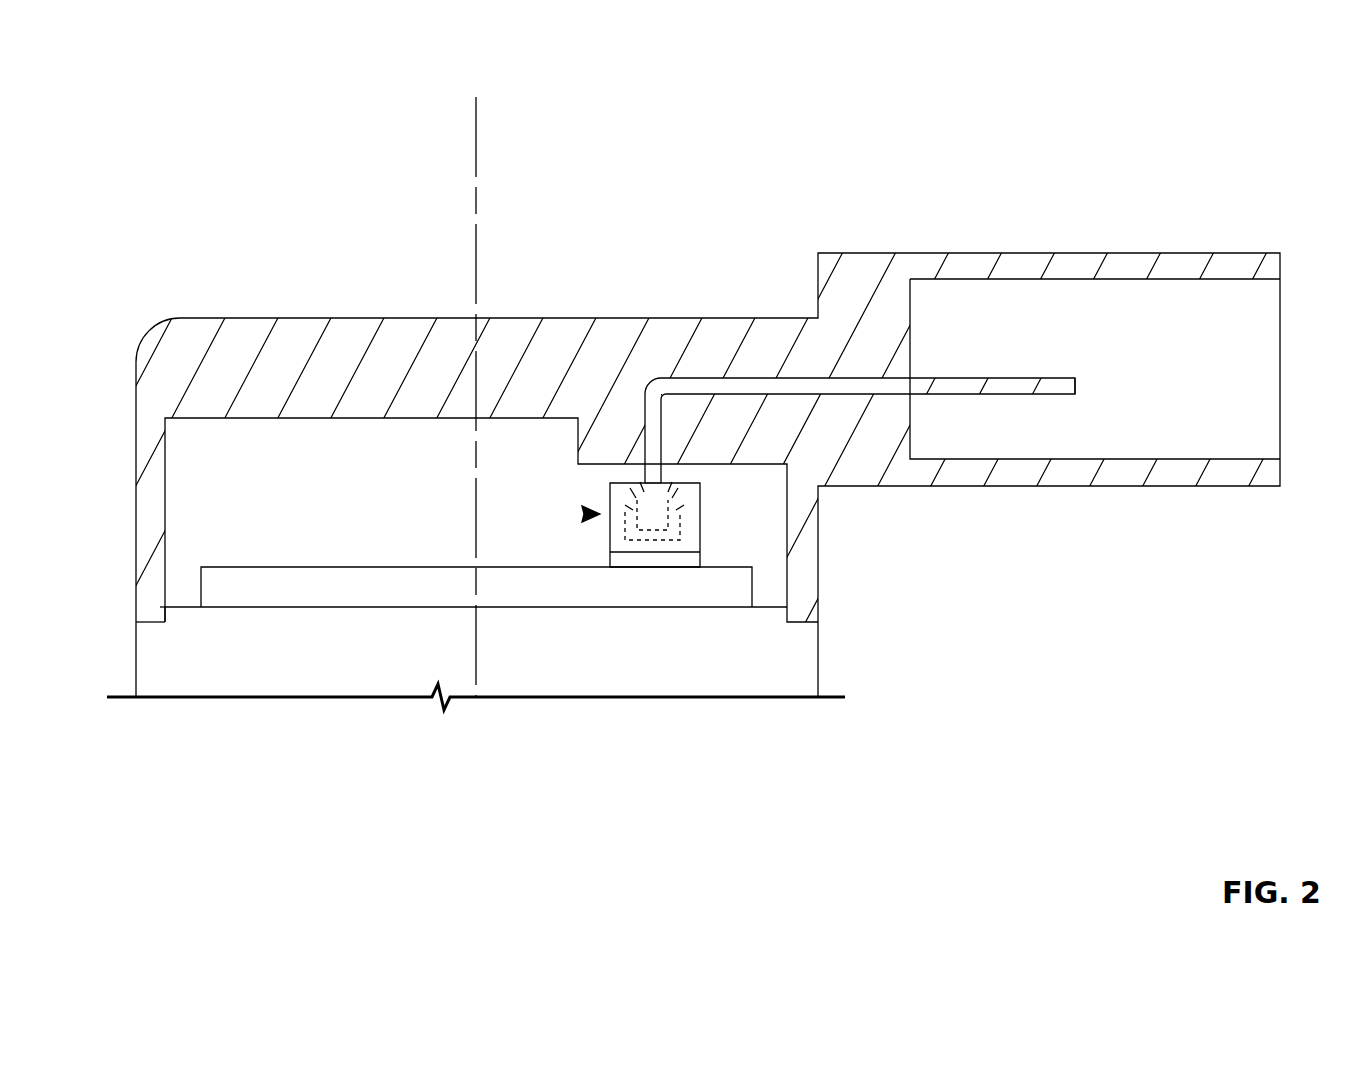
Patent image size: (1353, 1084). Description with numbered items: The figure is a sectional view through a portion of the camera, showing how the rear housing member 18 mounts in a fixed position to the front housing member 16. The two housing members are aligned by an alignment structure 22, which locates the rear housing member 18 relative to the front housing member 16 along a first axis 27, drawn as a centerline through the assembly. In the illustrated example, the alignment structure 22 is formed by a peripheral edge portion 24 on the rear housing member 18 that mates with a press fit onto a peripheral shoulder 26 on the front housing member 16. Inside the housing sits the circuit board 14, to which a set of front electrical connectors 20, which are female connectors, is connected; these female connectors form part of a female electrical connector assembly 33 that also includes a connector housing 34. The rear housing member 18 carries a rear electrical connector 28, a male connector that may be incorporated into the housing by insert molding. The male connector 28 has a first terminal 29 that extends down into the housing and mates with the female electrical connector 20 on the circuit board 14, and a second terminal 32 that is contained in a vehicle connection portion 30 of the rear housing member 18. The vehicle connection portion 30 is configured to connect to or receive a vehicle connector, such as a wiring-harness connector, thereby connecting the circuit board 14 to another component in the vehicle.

The circuit board 14 is at (752, 585).
The front housing member 16 is at (818, 672).
The rear housing member 18 is at (560, 318).
The front electrical connector 20 is at (665, 505).
The alignment structure 22 is at (256, 766).
The peripheral edge portion 24 is at (166, 612).
The peripheral shoulder 26 is at (165, 610).
The first axis 27 is at (474, 138).
The rear electrical connector 28 is at (757, 378).
The first terminal 29 is at (645, 472).
The vehicle connection portion 30 is at (1012, 486).
The second terminal 32 is at (1066, 378).
The female electrical connector assembly 33 is at (596, 514).
The connector housing 34 is at (612, 528).